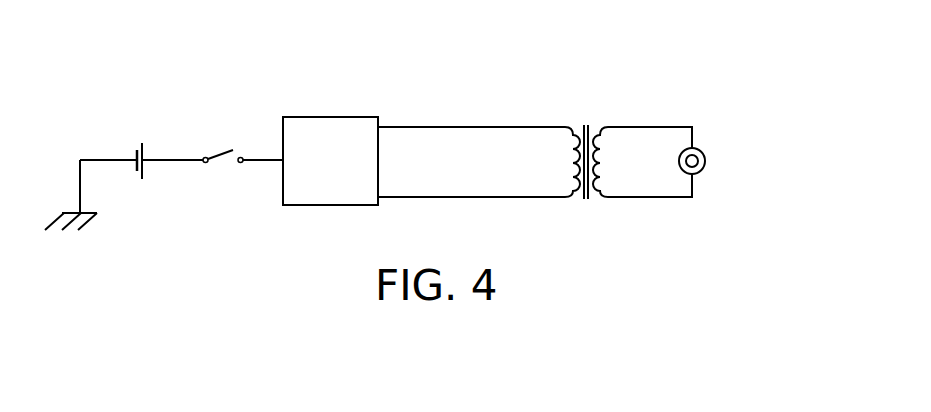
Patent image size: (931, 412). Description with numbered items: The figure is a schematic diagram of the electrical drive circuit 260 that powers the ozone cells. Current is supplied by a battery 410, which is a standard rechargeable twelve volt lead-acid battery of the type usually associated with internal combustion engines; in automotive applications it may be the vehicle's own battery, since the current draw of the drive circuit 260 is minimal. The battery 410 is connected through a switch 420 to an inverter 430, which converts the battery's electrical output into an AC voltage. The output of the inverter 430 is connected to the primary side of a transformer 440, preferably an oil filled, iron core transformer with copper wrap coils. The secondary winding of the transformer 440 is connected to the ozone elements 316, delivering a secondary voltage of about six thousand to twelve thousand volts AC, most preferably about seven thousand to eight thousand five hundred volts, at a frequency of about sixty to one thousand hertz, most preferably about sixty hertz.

The electrical drive circuit 260 is at (294, 69).
The battery 410 is at (141, 200).
The switch 420 is at (228, 194).
The inverter 430 is at (340, 117).
The transformer 440 is at (603, 127).
The ozone elements 316 is at (705, 161).